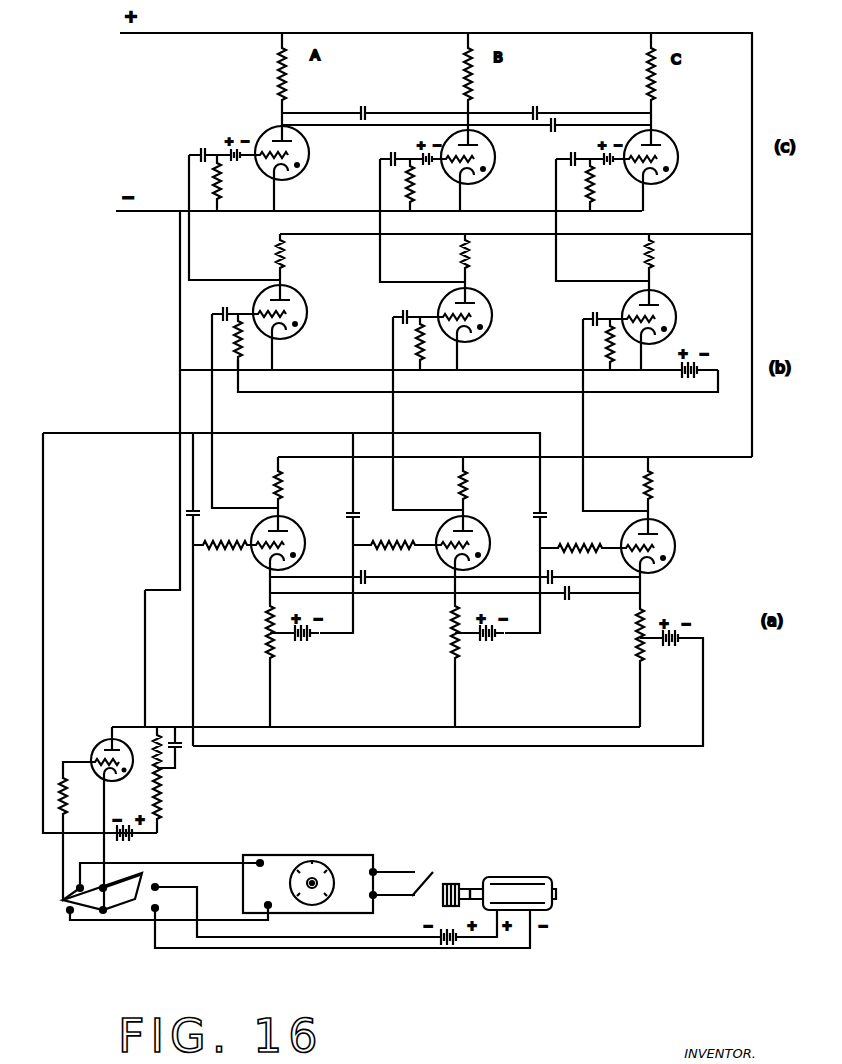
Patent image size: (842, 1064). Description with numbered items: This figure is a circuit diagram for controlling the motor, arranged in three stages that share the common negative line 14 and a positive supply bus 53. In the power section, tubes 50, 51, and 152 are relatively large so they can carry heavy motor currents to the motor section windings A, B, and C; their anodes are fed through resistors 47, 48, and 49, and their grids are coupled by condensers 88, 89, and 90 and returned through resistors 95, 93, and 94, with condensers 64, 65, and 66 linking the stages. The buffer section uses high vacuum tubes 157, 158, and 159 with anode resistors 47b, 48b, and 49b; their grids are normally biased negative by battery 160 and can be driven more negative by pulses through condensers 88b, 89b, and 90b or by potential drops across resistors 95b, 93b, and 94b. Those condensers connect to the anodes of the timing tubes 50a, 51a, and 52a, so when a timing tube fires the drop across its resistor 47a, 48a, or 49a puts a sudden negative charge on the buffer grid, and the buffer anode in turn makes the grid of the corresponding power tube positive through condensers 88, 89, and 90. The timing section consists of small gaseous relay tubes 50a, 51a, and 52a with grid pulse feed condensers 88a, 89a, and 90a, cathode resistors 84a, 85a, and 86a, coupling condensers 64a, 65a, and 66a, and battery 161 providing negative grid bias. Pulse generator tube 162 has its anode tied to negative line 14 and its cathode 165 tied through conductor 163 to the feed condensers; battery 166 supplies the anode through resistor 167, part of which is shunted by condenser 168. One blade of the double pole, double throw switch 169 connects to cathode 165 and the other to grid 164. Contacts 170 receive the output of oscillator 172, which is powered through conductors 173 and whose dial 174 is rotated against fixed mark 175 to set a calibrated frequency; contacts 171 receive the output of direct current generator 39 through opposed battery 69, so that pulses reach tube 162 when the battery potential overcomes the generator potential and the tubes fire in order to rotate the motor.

The positive supply bus 53 is at (228, 33).
The negative line 14 is at (138, 212).
The plate load resistor 47 is at (287, 104).
The plate load resistor 48 is at (470, 105).
The plate load resistor 49 is at (655, 110).
The power tube 50 is at (270, 130).
The power tube 51 is at (492, 170).
The electron tube 152 is at (672, 150).
The coupling capacitor 64 is at (370, 111).
The coupling capacitor 65 is at (553, 132).
The coupling capacitor 66 is at (536, 108).
The condenser 88 is at (202, 146).
The condenser 89 is at (385, 157).
The condenser 90 is at (575, 156).
The grid resistor 93 is at (414, 192).
The grid resistor 94 is at (596, 195).
The grid resistor 95 is at (224, 192).
The plate load resistor 47b is at (276, 262).
The plate load resistor 48b is at (460, 262).
The plate load resistor 49b is at (643, 262).
The high vacuum tube 157 is at (308, 314).
The high vacuum tube 158 is at (492, 320).
The high vacuum tube 159 is at (676, 312).
The condenser 88b is at (222, 303).
The condenser 89b is at (405, 307).
The condenser 90b is at (592, 308).
The resistor 93b is at (416, 345).
The resistor 94b is at (606, 352).
The resistor 95b is at (236, 346).
The battery 160 is at (694, 386).
The conductor 163 is at (43, 553).
The resistor 47a is at (276, 486).
The resistor 48a is at (462, 486).
The resistor 49a is at (650, 488).
The gaseous relay tube 50a is at (295, 526).
The gaseous relay tube 51a is at (478, 528).
The gaseous relay tube 52a is at (672, 538).
The grid pulse feed condenser 88a is at (203, 516).
The grid pulse feed condenser 89a is at (364, 516).
The grid pulse feed condenser 90a is at (553, 517).
The coupling capacitor 64a is at (373, 577).
The coupling capacitor 65a is at (569, 603).
The coupling capacitor 66a is at (562, 577).
The cathode resistor 84a is at (282, 653).
The cathode resistor 85a is at (462, 660).
The cathode resistor 86a is at (636, 660).
The battery 161 is at (661, 655).
The pulse generator tube 162 is at (100, 738).
The grid 164 is at (92, 758).
The cathode 165 is at (78, 796).
The battery 166 is at (126, 824).
The resistor 167 is at (160, 792).
The condenser 168 is at (181, 752).
The double pole, double throw switch 169 is at (140, 900).
The switch contacts 170 is at (77, 887).
The switch contacts 171 is at (158, 886).
The oscillator 172 is at (360, 855).
The conductors 173 is at (418, 872).
The dial 174 is at (324, 890).
The fixed mark 175 is at (310, 858).
The direct current generator 39 is at (521, 876).
The battery 69 is at (442, 930).